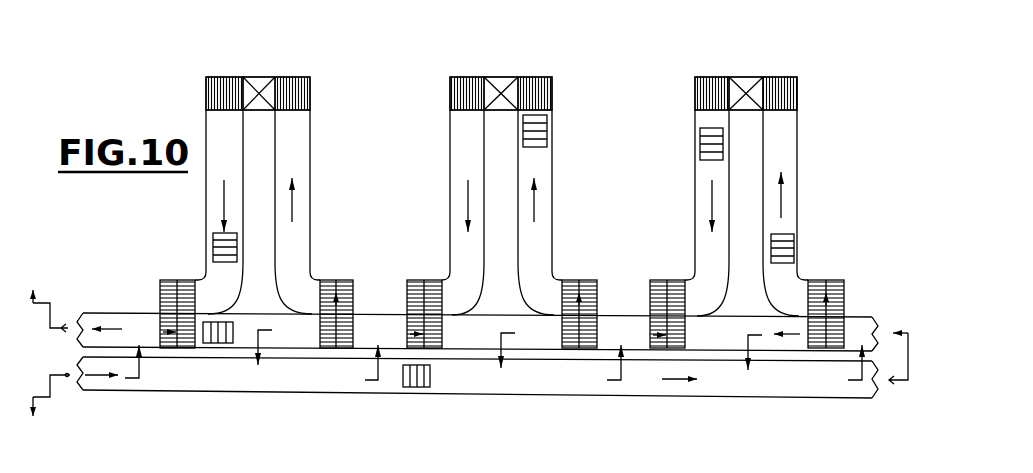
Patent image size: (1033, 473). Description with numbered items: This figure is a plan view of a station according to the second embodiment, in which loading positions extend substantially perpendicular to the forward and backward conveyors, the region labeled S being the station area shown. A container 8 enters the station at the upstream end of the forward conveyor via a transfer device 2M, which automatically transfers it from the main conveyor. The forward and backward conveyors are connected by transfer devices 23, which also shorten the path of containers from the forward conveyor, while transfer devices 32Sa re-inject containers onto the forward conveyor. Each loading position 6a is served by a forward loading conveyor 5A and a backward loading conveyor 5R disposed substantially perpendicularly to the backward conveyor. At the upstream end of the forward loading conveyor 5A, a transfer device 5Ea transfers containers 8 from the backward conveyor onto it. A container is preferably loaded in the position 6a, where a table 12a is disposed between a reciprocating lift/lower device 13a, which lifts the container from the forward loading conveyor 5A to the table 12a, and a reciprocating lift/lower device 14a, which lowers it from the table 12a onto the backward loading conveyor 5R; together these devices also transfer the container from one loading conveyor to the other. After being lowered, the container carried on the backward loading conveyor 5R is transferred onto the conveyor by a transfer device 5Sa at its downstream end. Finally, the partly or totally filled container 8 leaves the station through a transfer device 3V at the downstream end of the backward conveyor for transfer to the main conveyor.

The sheet S is at (204, 10).
The loading position 6a is at (244, 60).
The table 12a is at (268, 92).
The reciprocating lift/lower device 13a is at (297, 91).
The reciprocating lift/lower device 14a is at (703, 92).
The forward loading conveyor 5A is at (300, 158).
The backward loading conveyor 5R is at (700, 172).
The transfer device 5Sa is at (650, 300).
The transfer device 5Ea is at (340, 353).
The container 8 is at (233, 330).
The transfer device 23 is at (127, 380).
The transfer device 32Sa is at (745, 343).
The transfer device 3V is at (43, 303).
The transfer device 2M is at (43, 398).